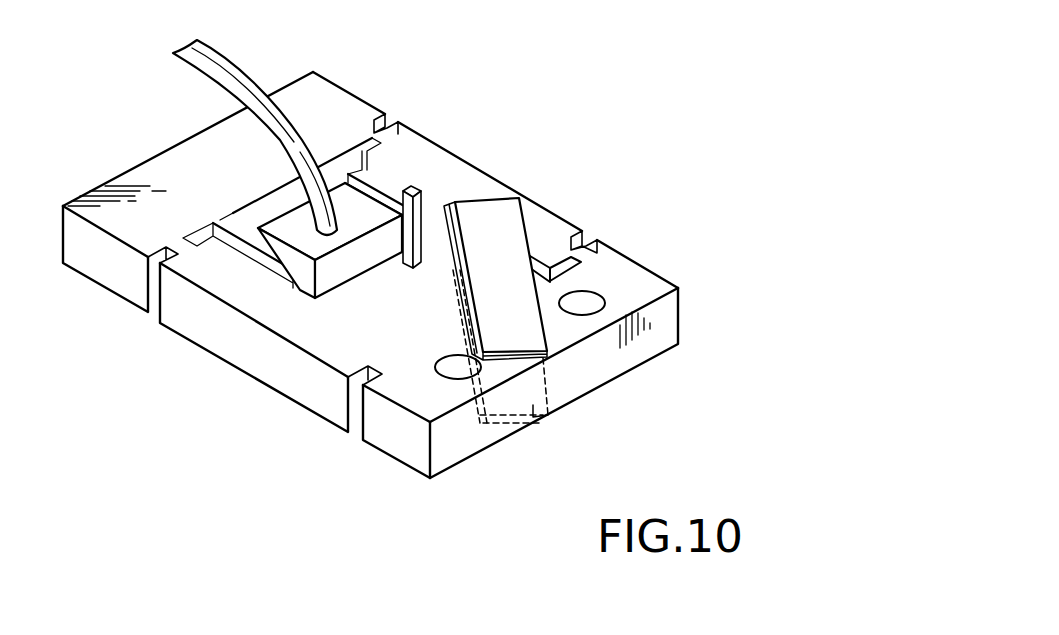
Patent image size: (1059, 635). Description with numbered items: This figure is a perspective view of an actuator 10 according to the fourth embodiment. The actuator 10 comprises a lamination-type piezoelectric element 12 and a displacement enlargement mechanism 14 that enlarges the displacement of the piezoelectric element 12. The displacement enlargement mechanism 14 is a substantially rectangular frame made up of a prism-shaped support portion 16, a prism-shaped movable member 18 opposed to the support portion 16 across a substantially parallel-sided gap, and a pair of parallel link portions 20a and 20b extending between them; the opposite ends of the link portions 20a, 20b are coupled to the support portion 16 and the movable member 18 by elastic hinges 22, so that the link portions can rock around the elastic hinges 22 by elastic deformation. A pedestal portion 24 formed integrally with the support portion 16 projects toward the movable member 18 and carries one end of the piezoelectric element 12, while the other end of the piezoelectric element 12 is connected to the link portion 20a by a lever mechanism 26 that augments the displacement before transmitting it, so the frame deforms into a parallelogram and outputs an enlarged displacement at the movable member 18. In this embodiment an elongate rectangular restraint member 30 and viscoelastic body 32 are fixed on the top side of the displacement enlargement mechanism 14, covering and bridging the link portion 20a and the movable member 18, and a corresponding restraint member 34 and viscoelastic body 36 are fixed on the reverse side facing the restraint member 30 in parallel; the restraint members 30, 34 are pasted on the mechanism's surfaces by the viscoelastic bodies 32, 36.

The actuator 10 is at (376, 284).
The lamination-type piezoelectric element 12 is at (360, 246).
The displacement enlargement mechanism 14 is at (376, 284).
The support portion 16 is at (162, 168).
The movable member 18 is at (610, 370).
The link portion 20a is at (555, 222).
The link portion 20b is at (298, 378).
The elastic hinges 22 is at (178, 244).
The pedestal portion 24 is at (292, 262).
The lever mechanism 26 is at (410, 210).
The restraint member 30 is at (497, 210).
The viscoelastic body 32 is at (532, 362).
The restraint member 34 is at (492, 430).
The viscoelastic body 36 is at (535, 422).